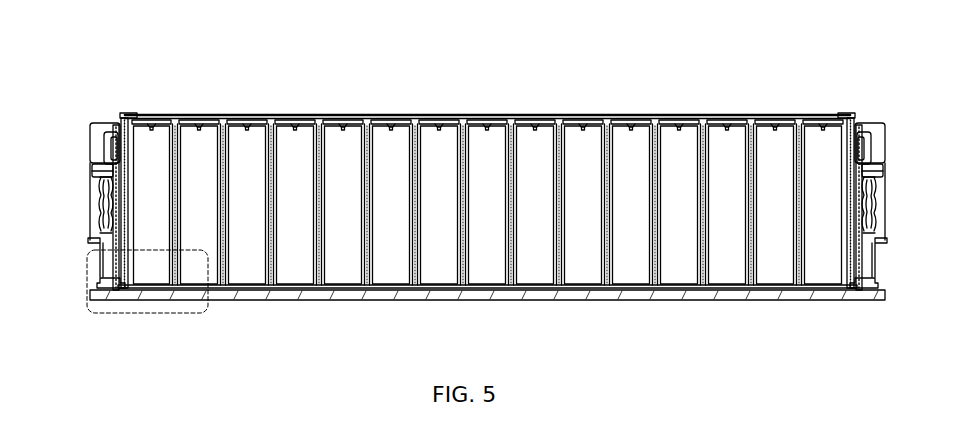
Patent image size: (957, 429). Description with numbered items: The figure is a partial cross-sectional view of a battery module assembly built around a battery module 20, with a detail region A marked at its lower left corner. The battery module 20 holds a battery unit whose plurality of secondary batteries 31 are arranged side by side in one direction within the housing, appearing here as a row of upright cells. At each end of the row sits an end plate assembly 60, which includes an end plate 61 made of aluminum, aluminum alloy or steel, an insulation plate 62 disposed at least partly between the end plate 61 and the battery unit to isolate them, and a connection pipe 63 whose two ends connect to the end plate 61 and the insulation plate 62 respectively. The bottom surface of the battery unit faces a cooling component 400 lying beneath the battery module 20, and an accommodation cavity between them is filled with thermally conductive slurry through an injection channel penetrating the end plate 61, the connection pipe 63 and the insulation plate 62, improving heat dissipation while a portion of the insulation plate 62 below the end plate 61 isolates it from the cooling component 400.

The battery module 20 is at (464, 205).
The secondary battery 31 is at (249, 270).
The cooling component 400 is at (177, 298).
The end plate assembly 60 is at (71, 211).
The end plate 61 is at (100, 232).
The insulation plate 62 is at (100, 279).
The connection pipe 63 is at (110, 255).
The detail region A is at (118, 313).